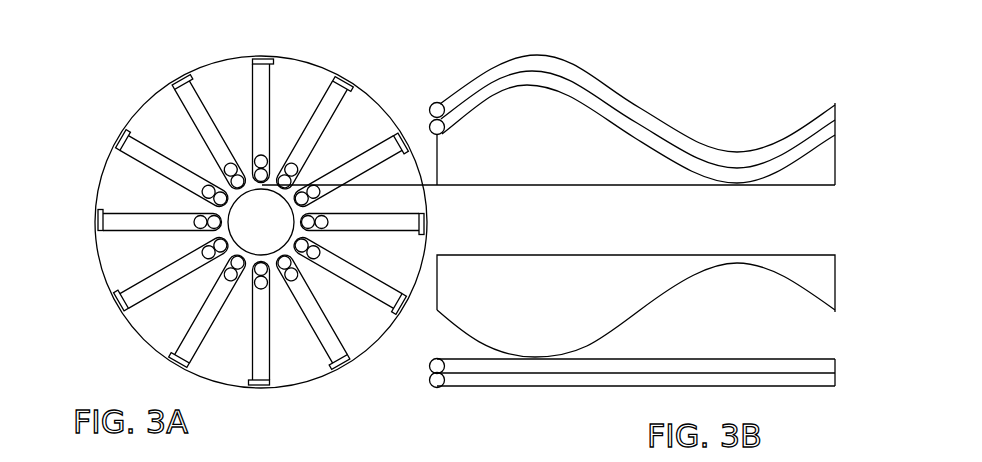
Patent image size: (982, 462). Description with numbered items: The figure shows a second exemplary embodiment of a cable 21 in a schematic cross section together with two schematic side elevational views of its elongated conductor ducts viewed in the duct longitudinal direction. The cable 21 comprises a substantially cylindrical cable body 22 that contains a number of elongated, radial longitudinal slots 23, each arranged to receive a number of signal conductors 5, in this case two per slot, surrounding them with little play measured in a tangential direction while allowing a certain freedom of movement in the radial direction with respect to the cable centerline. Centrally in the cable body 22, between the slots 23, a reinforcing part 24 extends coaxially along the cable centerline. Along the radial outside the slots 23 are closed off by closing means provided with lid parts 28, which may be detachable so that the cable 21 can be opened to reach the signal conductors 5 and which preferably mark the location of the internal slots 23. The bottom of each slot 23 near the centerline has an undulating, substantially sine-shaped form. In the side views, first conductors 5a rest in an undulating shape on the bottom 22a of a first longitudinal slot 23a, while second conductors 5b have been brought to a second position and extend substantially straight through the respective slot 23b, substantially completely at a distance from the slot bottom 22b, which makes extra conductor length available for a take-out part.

In FIG. 3A, the cable 21 is at (108, 100).
In FIG. 3A, the cable body 22 is at (118, 263).
In FIG. 3A, the radial slots 23 is at (258, 110).
In FIG. 3A, the reinforcing part 24 is at (246, 236).
In FIG. 3A, the lid parts 28 is at (268, 57).
In FIG. 3A, the signal conductors 5 is at (217, 193).
In FIG. 3B, the bottom of first longitudinal slot 22a is at (550, 88).
In FIG. 3B, the first longitudinal slot 23a is at (759, 136).
In FIG. 3B, the first conductors 5a is at (825, 128).
In FIG. 3B, the bottom of second slot 22b is at (703, 282).
In FIG. 3B, the second slot 23b is at (793, 320).
In FIG. 3B, the second conductors 5b is at (822, 366).